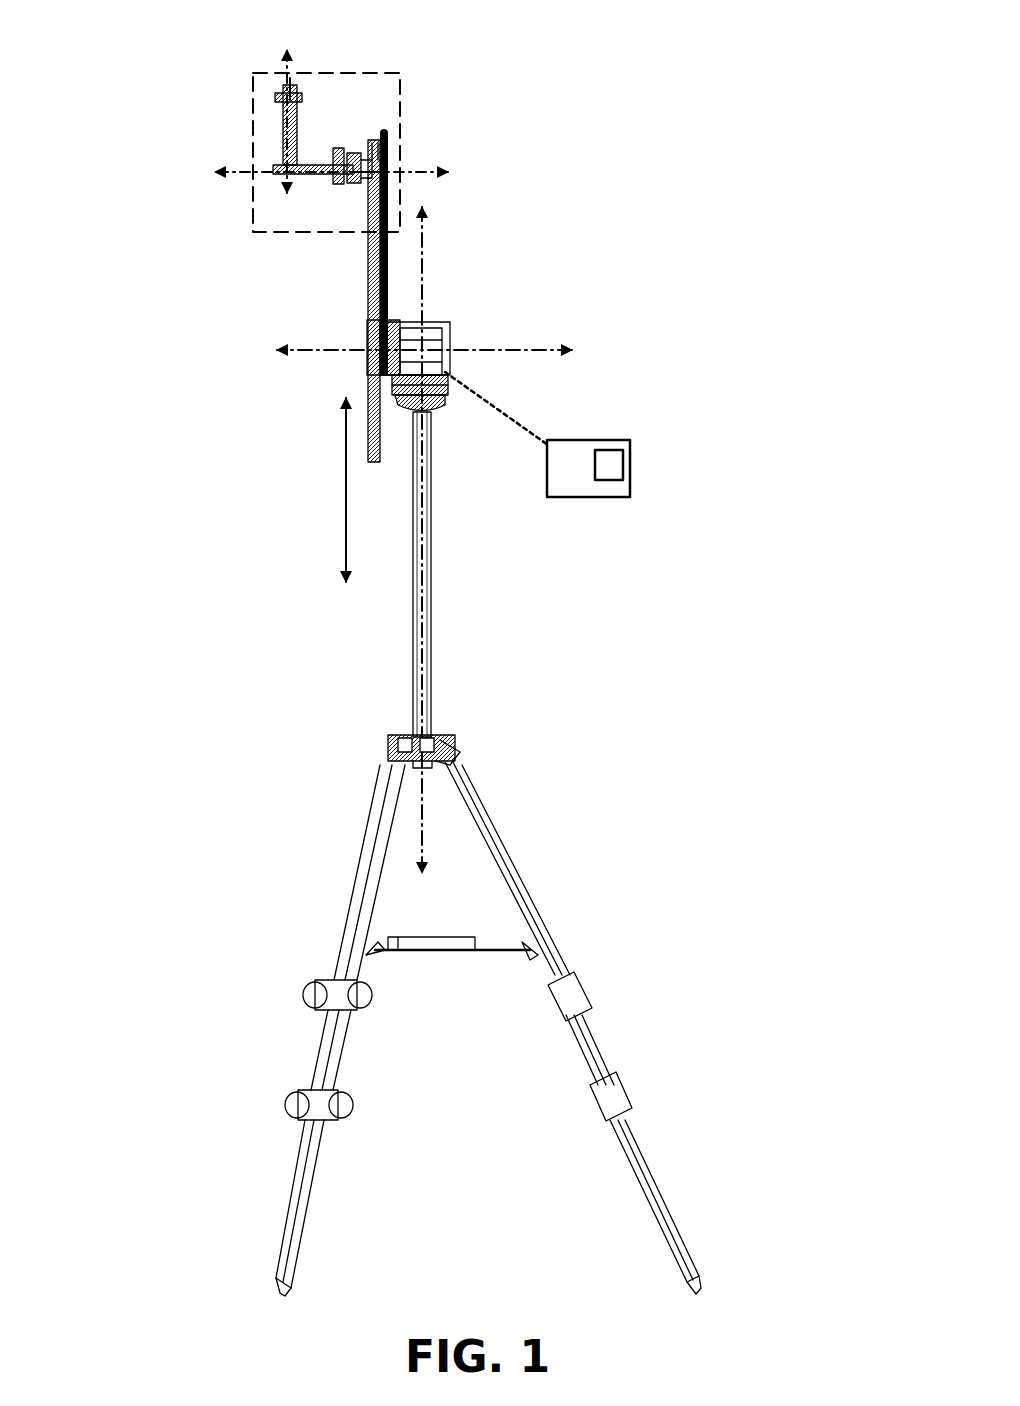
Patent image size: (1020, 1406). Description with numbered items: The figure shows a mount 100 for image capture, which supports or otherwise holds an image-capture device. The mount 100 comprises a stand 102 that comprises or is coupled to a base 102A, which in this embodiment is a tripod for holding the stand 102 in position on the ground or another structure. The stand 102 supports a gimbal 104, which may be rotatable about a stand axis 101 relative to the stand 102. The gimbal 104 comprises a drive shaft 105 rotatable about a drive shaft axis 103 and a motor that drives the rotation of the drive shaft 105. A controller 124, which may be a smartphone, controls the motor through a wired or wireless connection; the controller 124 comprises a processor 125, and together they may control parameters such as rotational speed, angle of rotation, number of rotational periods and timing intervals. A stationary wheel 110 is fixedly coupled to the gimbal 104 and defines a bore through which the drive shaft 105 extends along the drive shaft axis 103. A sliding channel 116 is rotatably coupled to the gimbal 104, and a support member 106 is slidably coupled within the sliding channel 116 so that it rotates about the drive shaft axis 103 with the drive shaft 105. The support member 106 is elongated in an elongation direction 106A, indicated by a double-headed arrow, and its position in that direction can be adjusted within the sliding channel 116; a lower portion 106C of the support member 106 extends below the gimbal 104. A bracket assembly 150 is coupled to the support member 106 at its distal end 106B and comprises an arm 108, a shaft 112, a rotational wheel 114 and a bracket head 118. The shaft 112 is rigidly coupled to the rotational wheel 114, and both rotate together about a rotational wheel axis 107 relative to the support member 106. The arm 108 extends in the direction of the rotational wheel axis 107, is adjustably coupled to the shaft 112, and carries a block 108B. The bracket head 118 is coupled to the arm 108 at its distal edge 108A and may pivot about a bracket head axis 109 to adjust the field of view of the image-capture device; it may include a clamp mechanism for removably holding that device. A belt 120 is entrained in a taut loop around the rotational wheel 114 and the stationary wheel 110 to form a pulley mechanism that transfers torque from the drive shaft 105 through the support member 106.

The mount 100 is at (688, 112).
The stand axis 101 is at (422, 808).
The stand 102 is at (415, 548).
The base 102A is at (488, 838).
The drive shaft axis 103 is at (512, 352).
The gimbal 104 is at (428, 352).
The drive shaft 105 is at (398, 338).
The support member 106 is at (366, 281).
The elongation direction 106A is at (346, 522).
The distal end 106B is at (364, 194).
The bar lower portion 106C is at (368, 429).
The rotational wheel axis 107 is at (233, 166).
The arm 108 is at (315, 180).
The distal edge 108A is at (292, 174).
The plate block 108B is at (330, 163).
The bracket head axis 109 is at (283, 58).
The stationary wheel 110 is at (375, 367).
The shaft 112 is at (357, 180).
The rotational wheel 114 is at (386, 145).
The sliding channel 116 is at (368, 352).
The bracket head 118 is at (280, 107).
The belt 120 is at (388, 262).
The controller 124 is at (575, 470).
The processor 125 is at (607, 468).
The bracket assembly 150 is at (358, 72).